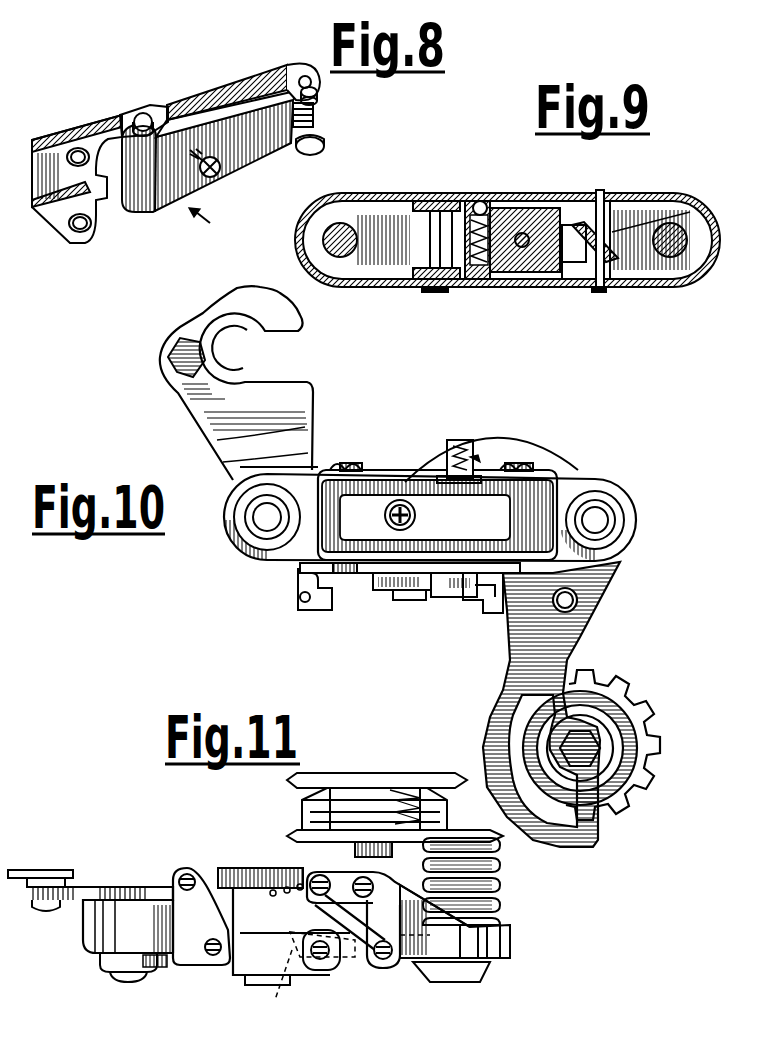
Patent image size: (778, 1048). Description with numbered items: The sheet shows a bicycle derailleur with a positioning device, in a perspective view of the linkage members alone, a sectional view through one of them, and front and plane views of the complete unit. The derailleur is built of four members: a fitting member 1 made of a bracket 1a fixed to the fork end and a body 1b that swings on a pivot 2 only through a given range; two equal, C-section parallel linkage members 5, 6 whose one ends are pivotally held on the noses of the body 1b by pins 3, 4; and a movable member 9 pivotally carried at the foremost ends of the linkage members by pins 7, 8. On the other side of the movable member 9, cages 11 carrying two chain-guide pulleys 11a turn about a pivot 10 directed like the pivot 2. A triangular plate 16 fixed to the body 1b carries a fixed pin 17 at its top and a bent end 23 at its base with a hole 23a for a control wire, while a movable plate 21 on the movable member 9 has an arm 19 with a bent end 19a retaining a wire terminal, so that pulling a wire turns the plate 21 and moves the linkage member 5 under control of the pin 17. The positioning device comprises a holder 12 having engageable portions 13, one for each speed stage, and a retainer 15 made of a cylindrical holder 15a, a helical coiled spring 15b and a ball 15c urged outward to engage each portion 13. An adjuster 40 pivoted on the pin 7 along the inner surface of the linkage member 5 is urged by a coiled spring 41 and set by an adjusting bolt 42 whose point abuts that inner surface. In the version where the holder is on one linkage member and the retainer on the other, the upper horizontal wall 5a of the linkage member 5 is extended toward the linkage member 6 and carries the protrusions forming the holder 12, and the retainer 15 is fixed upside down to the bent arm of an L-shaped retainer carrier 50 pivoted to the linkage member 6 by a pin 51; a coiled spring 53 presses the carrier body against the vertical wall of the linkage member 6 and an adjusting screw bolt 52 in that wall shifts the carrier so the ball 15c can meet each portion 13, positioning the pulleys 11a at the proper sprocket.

In FIG. 10, the fitting member 1 is at (188, 390).
In FIG. 11, the fitting member 1 is at (142, 886).
In FIG. 10, the bracket 1a is at (222, 428).
In FIG. 11, the bracket 1a is at (100, 886).
In FIG. 9, the body 1b is at (370, 198).
In FIG. 10, the body 1b is at (230, 520).
In FIG. 11, the body 1b is at (155, 970).
In FIG. 9, the pivot 2 is at (330, 240).
In FIG. 10, the pivot 2 is at (262, 520).
In FIG. 11, the pivot 2 is at (125, 975).
In FIG. 10, the pin 3 is at (338, 465).
In FIG. 11, the pin 3 is at (186, 874).
In FIG. 9, the pin 4 is at (435, 197).
In FIG. 10, the pin 4 is at (355, 465).
In FIG. 11, the pin 4 is at (205, 957).
In FIG. 8, the linkage member 5 is at (217, 84).
In FIG. 9, the linkage member 5 is at (598, 192).
In FIG. 11, the linkage member 5 is at (205, 878).
In FIG. 11, the upper horizontal wall 5a is at (238, 866).
In FIG. 10, the linkage member 6 is at (560, 482).
In FIG. 11, the linkage member 6 is at (300, 960).
In FIG. 9, the pin 7 is at (603, 196).
In FIG. 10, the pin 7 is at (515, 462).
In FIG. 11, the pin 7 is at (372, 895).
In FIG. 10, the pin 8 is at (520, 467).
In FIG. 11, the pin 8 is at (390, 960).
In FIG. 9, the movable member 9 is at (700, 282).
In FIG. 10, the movable member 9 is at (636, 520).
In FIG. 11, the movable member 9 is at (500, 952).
In FIG. 10, the pivot 10 is at (605, 528).
In FIG. 10, the cages 11 is at (580, 630).
In FIG. 11, the cages 11 is at (350, 780).
In FIG. 10, the chain-guide pulleys 11a is at (623, 703).
In FIG. 11, the chain-guide pulleys 11a is at (400, 795).
In FIG. 9, the holder 12 is at (563, 200).
In FIG. 9, the engageable portions 13 is at (472, 198).
In FIG. 11, the engageable portions 13 is at (270, 886).
In FIG. 8, the retainer 15 is at (162, 112).
In FIG. 9, the retainer 15 is at (480, 200).
In FIG. 10, the retainer 15 is at (480, 455).
In FIG. 11, the retainer 15 is at (330, 893).
In FIG. 9, the cylindrical holder 15a is at (516, 272).
In FIG. 10, the cylindrical holder 15a is at (468, 455).
In FIG. 9, the helical coiled spring 15b is at (482, 278).
In FIG. 10, the helical coiled spring 15b is at (462, 448).
In FIG. 8, the ball 15c is at (146, 114).
In FIG. 9, the ball 15c is at (492, 205).
In FIG. 10, the ball 15c is at (450, 470).
In FIG. 10, the triangular plate 16 is at (382, 592).
In FIG. 10, the fixed pin 17 is at (405, 602).
In FIG. 10, the arm 19 is at (478, 600).
In FIG. 10, the bent end 19a is at (483, 605).
In FIG. 10, the plate 21 is at (440, 598).
In FIG. 10, the bent end 23 is at (298, 588).
In FIG. 10, the hole 23a is at (302, 603).
In FIG. 8, the adjuster 40 is at (260, 96).
In FIG. 9, the adjuster 40 is at (578, 282).
In FIG. 8, the coiled spring 41 is at (316, 115).
In FIG. 9, the coiled spring 41 is at (672, 200).
In FIG. 8, the adjusting bolt 42 is at (217, 173).
In FIG. 9, the adjusting bolt 42 is at (528, 245).
In FIG. 11, the retainer carrier 50 is at (340, 975).
In FIG. 11, the pin 51 is at (324, 960).
In FIG. 10, the adjusting screw bolt 52 is at (400, 500).
In FIG. 11, the adjusting screw bolt 52 is at (260, 982).
In FIG. 11, the coiled spring 53 is at (285, 985).